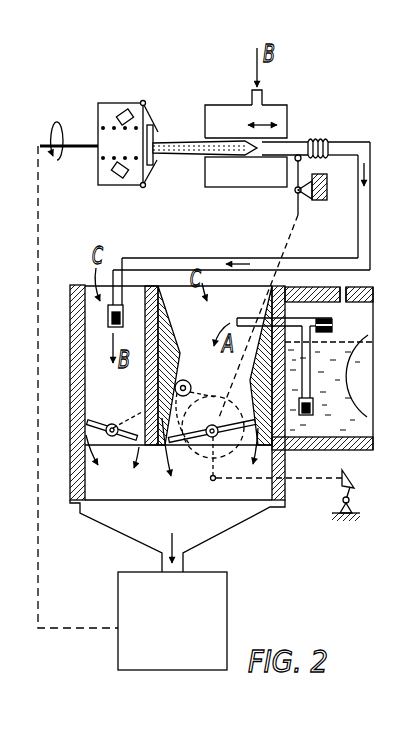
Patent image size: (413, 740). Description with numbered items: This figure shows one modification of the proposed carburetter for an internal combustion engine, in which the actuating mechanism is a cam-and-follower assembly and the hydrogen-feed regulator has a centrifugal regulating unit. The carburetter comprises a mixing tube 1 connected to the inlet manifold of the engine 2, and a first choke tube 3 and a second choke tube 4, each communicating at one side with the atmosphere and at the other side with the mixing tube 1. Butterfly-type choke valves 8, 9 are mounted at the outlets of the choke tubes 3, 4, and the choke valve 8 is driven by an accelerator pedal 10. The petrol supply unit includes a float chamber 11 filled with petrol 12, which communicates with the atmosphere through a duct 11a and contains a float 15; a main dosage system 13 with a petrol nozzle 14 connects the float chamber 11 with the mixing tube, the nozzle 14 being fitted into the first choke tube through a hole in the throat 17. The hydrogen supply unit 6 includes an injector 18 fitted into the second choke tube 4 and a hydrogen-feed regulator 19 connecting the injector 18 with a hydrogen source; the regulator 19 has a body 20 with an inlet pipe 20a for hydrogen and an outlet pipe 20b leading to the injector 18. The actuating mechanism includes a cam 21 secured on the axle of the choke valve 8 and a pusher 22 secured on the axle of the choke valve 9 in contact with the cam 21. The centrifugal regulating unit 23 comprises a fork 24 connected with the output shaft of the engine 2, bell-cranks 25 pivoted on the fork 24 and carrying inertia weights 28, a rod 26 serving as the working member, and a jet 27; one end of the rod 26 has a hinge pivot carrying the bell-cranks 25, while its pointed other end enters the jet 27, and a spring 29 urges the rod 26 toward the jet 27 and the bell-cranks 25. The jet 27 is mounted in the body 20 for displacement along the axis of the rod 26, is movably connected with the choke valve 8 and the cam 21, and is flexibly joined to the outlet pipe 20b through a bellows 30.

The mixing tube 1 is at (285, 493).
The engine 2 is at (172, 621).
The first choke tube 3 is at (233, 283).
The second choke tube 4 is at (88, 283).
The hydrogen supply unit 6 is at (379, 188).
The choke valve 8 is at (181, 448).
The choke valve 9 is at (128, 441).
The accelerator pedal 10 is at (355, 489).
The float chamber 11 is at (368, 449).
The duct 11a is at (346, 295).
The petrol 12 is at (365, 419).
The main dosage system 13 is at (308, 376).
The petrol nozzle 14 is at (245, 319).
The float 15 is at (364, 374).
The throat 17 is at (173, 340).
The injector 18 is at (109, 328).
The hydrogen-feed regulator 19 is at (191, 103).
The body 20 is at (258, 189).
The inlet pipe 20a is at (263, 101).
The outlet pipe 20b is at (297, 139).
The cam 21 is at (229, 410).
The pusher 22 is at (194, 386).
The centrifugal regulating unit 23 is at (91, 154).
The fork 24 is at (110, 103).
The bell-cranks 25 is at (156, 127).
The rod 26 is at (176, 152).
The jet 27 is at (262, 158).
The inertia weights 28 is at (125, 112).
The spring 29 is at (112, 126).
The bellows 30 is at (329, 142).